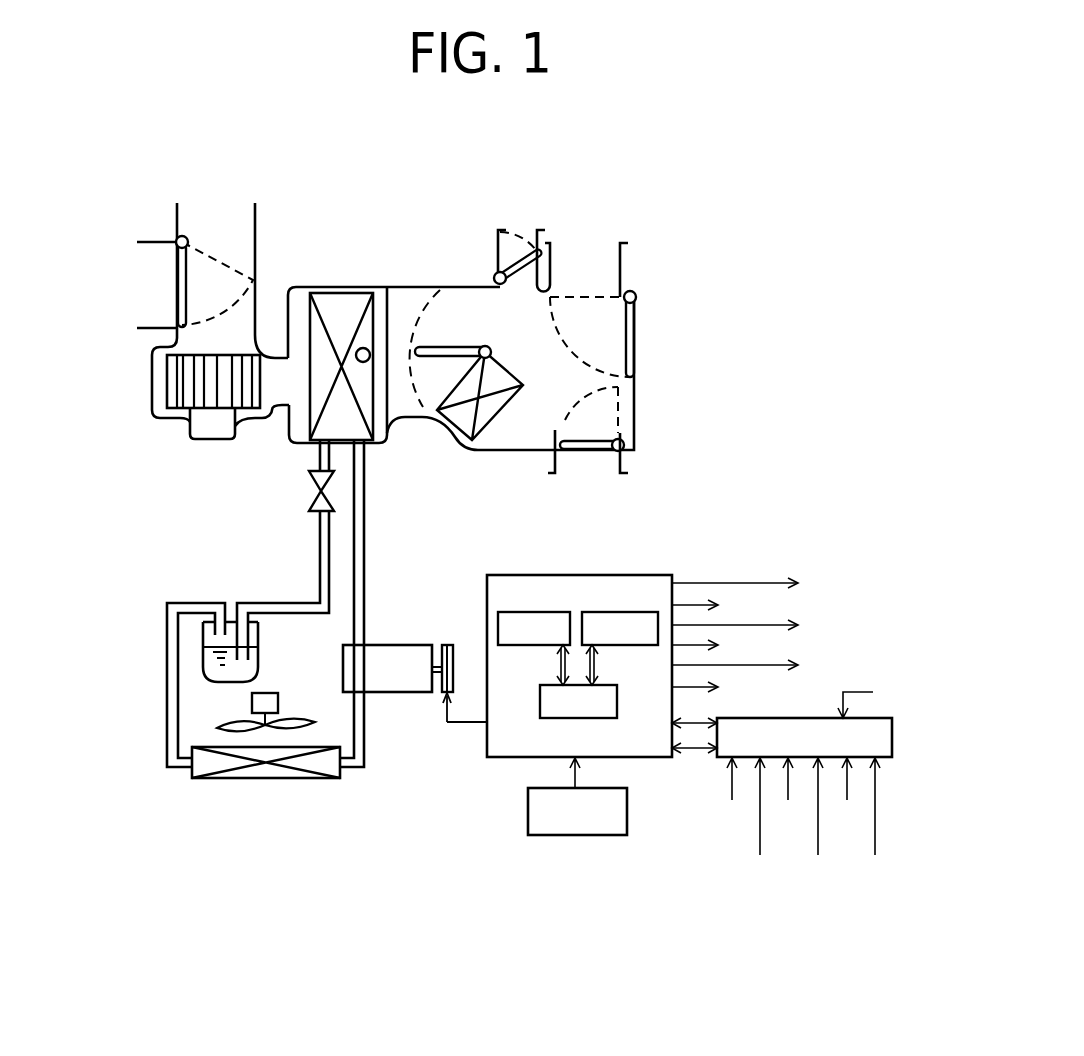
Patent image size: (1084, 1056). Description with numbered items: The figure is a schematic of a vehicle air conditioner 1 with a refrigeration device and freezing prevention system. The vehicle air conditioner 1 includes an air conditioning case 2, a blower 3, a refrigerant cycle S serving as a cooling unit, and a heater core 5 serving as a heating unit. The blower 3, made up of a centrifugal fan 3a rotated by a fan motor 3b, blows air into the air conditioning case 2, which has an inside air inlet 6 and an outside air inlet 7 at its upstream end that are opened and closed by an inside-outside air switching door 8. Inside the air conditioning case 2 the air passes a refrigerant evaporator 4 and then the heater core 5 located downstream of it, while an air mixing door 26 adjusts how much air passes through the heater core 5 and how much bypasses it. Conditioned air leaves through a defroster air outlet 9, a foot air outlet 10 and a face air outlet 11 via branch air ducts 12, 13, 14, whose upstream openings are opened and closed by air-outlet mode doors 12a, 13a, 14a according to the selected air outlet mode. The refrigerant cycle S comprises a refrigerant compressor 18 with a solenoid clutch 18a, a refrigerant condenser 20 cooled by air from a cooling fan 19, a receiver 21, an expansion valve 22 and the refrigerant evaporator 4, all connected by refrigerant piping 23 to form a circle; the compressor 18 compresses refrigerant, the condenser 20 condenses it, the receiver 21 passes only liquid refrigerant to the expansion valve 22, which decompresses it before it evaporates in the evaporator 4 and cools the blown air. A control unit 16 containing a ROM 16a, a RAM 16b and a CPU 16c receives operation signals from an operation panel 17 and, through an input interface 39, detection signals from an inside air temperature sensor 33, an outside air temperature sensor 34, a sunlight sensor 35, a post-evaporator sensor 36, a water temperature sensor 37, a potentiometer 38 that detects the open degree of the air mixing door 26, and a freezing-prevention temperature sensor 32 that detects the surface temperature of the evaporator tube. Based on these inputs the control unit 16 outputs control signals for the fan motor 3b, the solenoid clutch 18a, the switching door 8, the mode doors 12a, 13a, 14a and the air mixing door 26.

The vehicle air conditioner 1 is at (439, 189).
The air conditioning case 2 is at (330, 287).
The blower 3 is at (83, 397).
The centrifugal fan 3a is at (167, 398).
The fan motor 3b is at (200, 434).
The refrigerant evaporator 4 is at (312, 310).
The heater core 5 is at (462, 430).
The inside air inlet 6 is at (86, 326).
The outside air inlet 7 is at (224, 214).
The inside-outside air switching door 8 is at (176, 283).
The defroster air outlet 9 is at (508, 214).
The foot air outlet 10 is at (577, 500).
The face air outlet 11 is at (572, 252).
The branch air duct 12 is at (497, 246).
The air-outlet mode door 12a is at (499, 268).
The branch air duct 13 is at (626, 463).
The air-outlet mode door 13a is at (624, 438).
The branch air duct 14 is at (621, 262).
The air-outlet mode door 14a is at (636, 340).
The control unit 16 is at (582, 572).
The read only memory (ROM) 16a is at (511, 611).
The random access memory (RAM) 16b is at (620, 611).
The central processing unit (CPU) 16c is at (550, 718).
The operation panel 17 is at (575, 835).
The refrigerant compressor 18 is at (398, 693).
The solenoid clutch 18a is at (454, 666).
The cooling fan 19 is at (252, 705).
The refrigerant condenser 20 is at (264, 779).
The receiver 21 is at (259, 657).
The expansion valve 22 is at (313, 504).
The refrigerant piping 23 is at (366, 547).
The air mixing door 26 is at (435, 346).
The freezing-prevention temperature sensor 32 is at (368, 347).
The inside air temperature sensor 33 is at (730, 800).
The outside air temperature sensor 34 is at (757, 828).
The sunlight sensor 35 is at (786, 800).
The post-evaporator sensor 36 is at (816, 828).
The water temperature sensor 37 is at (845, 800).
The potentiometer 38 is at (876, 828).
The input interface 39 is at (892, 738).
The refrigerant cycle S is at (190, 598).